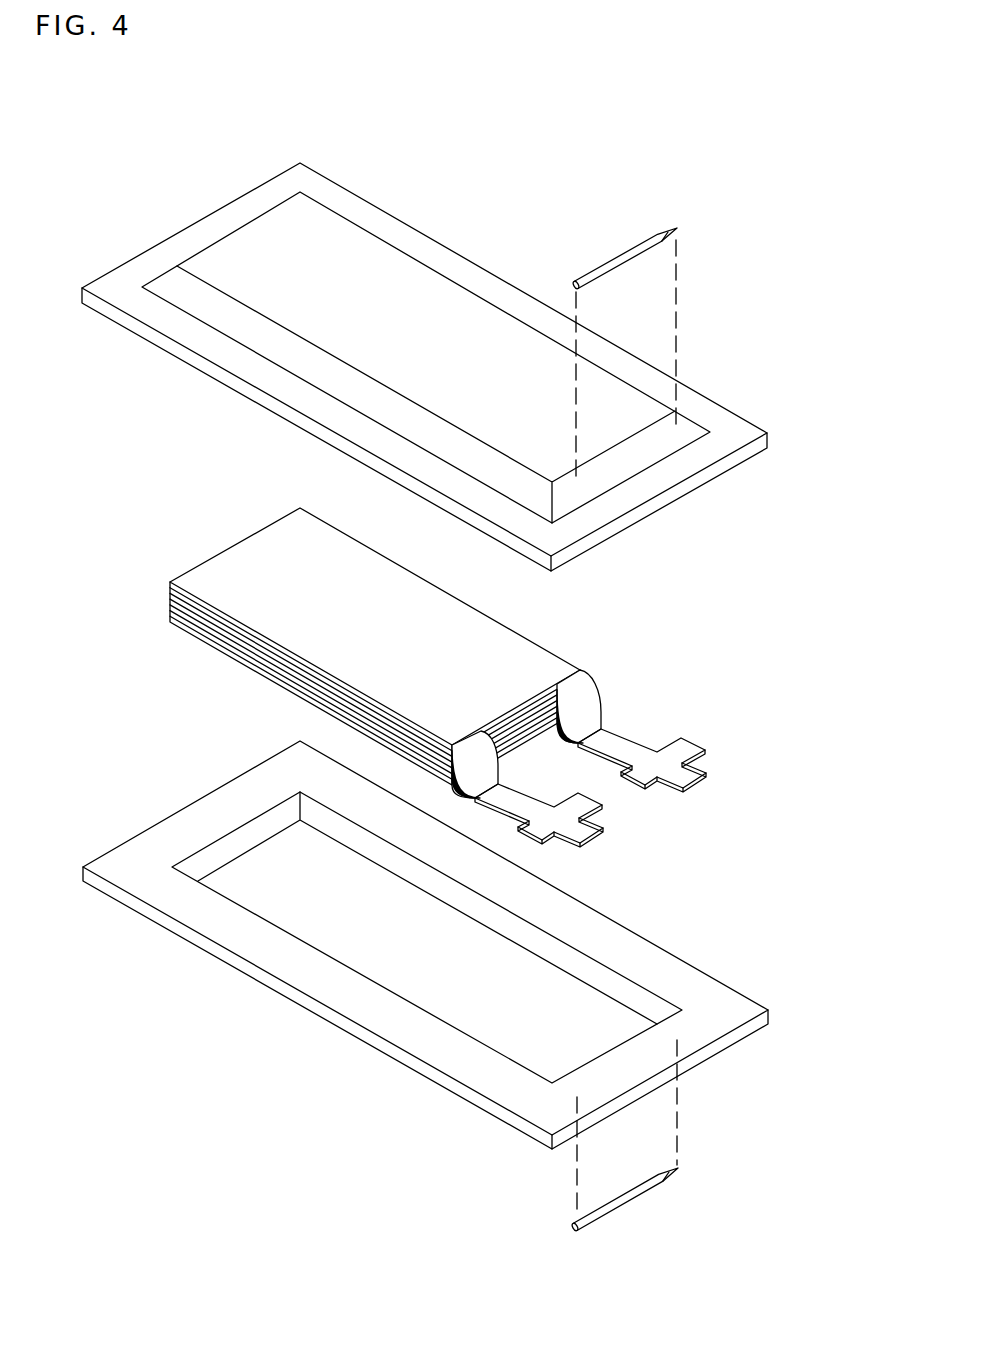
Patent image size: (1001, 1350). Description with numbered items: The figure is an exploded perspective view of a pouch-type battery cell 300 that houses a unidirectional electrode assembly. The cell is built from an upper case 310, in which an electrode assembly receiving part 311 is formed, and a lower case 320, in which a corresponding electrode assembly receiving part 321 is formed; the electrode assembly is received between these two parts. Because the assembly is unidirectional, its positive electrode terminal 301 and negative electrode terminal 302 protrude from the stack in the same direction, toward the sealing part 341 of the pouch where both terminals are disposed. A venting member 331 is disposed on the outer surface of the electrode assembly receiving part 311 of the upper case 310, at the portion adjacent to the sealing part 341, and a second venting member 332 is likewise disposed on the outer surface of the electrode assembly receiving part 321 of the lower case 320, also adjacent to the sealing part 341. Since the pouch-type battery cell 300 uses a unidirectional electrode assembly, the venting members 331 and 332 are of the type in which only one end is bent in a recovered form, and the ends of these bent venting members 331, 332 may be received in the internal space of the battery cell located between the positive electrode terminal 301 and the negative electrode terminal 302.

The pouch-type battery cell 300 is at (83, 121).
The positive electrode terminal 301 is at (587, 828).
The negative electrode terminal 302 is at (688, 773).
The upper case 310 is at (457, 253).
The electrode assembly receiving part 311 is at (340, 237).
The lower case 320 is at (277, 983).
The electrode assembly receiving part 321 is at (398, 950).
The venting member 331 is at (624, 250).
The venting member 332 is at (628, 1205).
The sealing part 341 is at (713, 445).